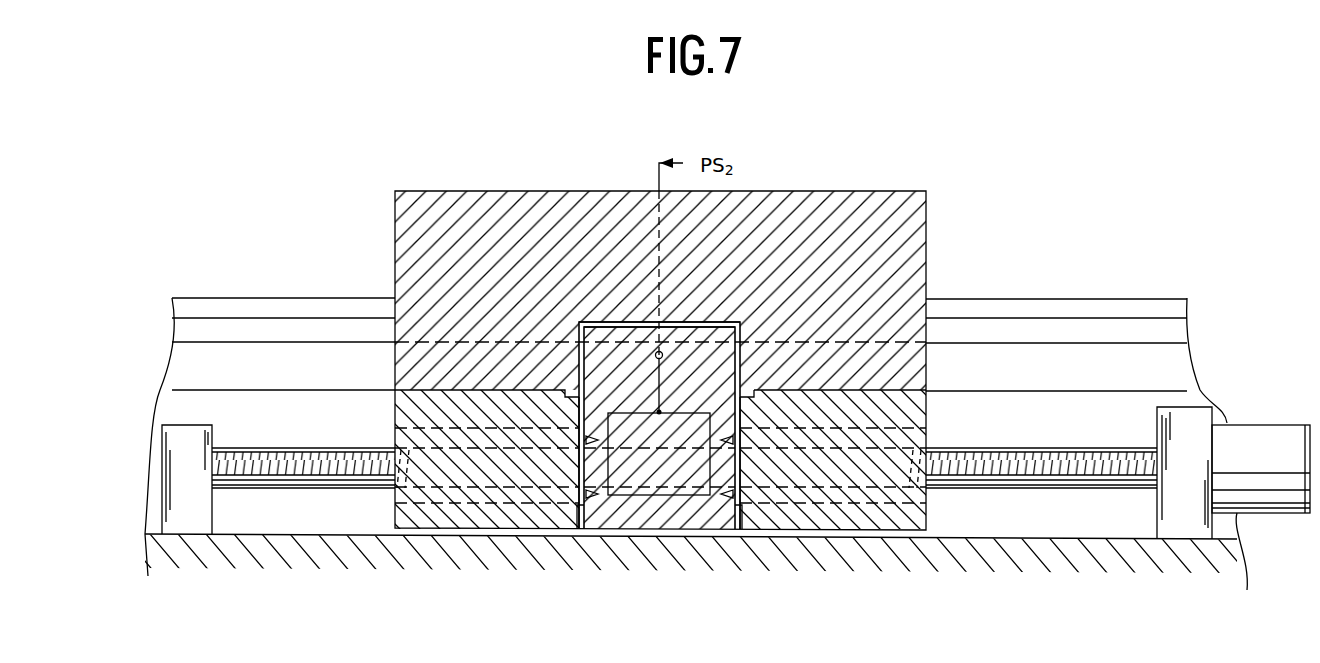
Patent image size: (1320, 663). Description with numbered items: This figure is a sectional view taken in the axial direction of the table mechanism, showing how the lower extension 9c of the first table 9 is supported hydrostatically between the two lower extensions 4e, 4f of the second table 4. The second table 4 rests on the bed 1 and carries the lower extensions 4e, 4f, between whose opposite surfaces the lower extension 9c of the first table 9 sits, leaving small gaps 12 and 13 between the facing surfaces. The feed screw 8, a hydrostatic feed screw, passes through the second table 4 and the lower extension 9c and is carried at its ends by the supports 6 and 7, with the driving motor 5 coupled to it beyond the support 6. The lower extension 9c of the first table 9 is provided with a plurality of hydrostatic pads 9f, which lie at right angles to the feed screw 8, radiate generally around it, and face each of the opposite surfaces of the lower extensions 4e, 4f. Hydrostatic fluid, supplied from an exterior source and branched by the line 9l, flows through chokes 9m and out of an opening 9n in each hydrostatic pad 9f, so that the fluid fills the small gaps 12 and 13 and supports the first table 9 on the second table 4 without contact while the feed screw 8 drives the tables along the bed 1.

The bed 1 is at (1146, 552).
The second table 4 is at (745, 203).
The lower extension 4e is at (882, 532).
The lower extension 4f is at (462, 518).
The driving motor 5 is at (1265, 445).
The support 6 is at (1193, 420).
The support 7 is at (187, 515).
The feed screw 8 is at (1050, 480).
The first table 9 is at (612, 350).
The lower extension 9c is at (658, 517).
The hydrostatic pads 9f is at (593, 527).
The line 9l is at (700, 322).
The chokes 9m is at (597, 500).
The opening 9n is at (578, 503).
The small gap 12 is at (736, 520).
The small gap 13 is at (583, 535).